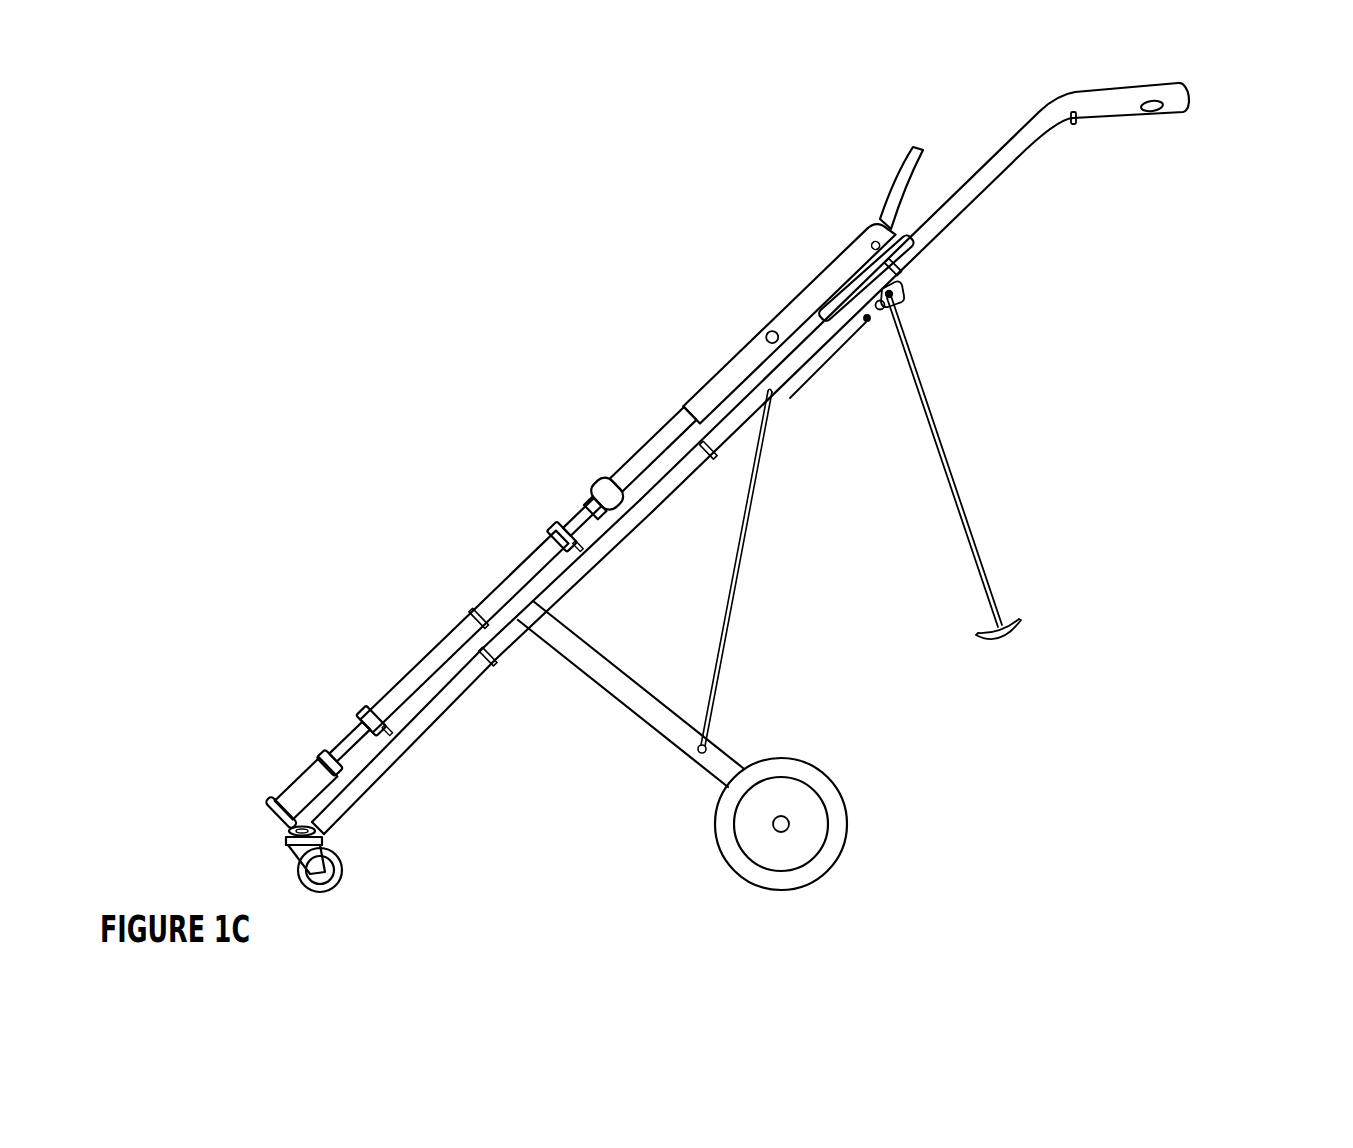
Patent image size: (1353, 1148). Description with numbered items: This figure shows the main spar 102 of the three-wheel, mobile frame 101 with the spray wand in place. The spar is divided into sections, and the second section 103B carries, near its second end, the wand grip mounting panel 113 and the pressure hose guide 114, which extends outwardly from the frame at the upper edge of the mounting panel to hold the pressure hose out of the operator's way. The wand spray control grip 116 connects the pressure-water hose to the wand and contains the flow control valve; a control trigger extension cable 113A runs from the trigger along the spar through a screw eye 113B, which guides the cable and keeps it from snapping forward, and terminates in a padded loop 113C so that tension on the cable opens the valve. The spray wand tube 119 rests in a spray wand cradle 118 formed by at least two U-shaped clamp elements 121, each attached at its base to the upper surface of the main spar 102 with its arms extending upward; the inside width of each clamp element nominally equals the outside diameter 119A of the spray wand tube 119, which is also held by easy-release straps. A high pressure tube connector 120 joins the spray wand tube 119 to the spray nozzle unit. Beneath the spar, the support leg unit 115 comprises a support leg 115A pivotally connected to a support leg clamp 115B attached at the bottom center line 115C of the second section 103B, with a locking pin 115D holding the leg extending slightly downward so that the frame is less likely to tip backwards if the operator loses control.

The three-wheel, mobile frame 101 is at (470, 338).
The main spar 102 is at (440, 720).
The second section 103B is at (975, 195).
The wand grip mounting panel 113 is at (840, 245).
The control trigger extension cable 113A is at (987, 158).
The screw eye 113B is at (1076, 122).
The padded loop 113C is at (1186, 100).
The pressure hose guide 114 is at (918, 150).
The support leg unit 115 is at (905, 515).
The support leg 115A is at (940, 453).
The support leg clamp 115B is at (897, 290).
The bottom center line 115C is at (890, 306).
The locking pin 115D is at (900, 280).
The wand spray control grip 116 is at (745, 354).
The spray wand cradle 118 is at (436, 560).
The spray wand tube 119 is at (453, 630).
The outside diameter 119A is at (490, 624).
The high pressure tube connector 120 is at (323, 752).
The U-shaped clamp element 121 is at (565, 527).